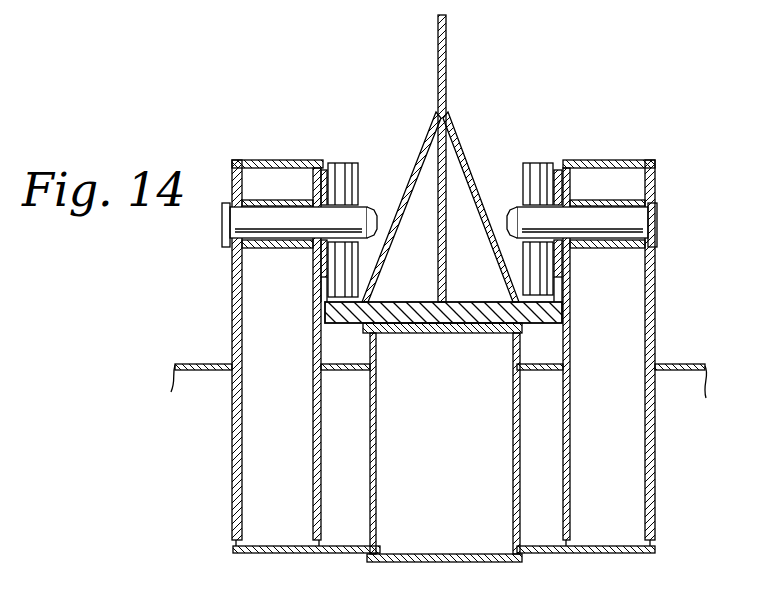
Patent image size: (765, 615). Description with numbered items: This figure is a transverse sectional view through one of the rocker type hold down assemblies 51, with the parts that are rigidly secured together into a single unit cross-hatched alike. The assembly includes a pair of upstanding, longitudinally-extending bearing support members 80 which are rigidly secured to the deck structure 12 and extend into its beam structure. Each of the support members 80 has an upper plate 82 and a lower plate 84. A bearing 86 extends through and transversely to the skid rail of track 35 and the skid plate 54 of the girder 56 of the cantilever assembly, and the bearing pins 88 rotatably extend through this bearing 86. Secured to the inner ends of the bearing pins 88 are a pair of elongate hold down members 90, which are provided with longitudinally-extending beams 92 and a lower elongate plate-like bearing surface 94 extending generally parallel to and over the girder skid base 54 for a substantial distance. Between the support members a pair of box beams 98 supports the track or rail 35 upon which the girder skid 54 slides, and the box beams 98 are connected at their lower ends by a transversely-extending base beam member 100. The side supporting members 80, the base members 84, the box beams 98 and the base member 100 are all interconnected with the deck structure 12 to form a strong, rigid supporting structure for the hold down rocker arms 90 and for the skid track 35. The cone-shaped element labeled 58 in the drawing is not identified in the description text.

The deck structure 12 is at (350, 372).
The skid rail of track 35 is at (460, 333).
The rocker type hold down assembly 51 is at (228, 273).
The skid plate 54 is at (460, 307).
The girder 56 is at (444, 58).
The cone 58 is at (423, 136).
The bearing support members 80 is at (562, 167).
The upper plate 82 is at (279, 158).
The lower plate 84 is at (278, 553).
The bearing 86 is at (282, 248).
The bearing pins 88 is at (658, 218).
The hold down members 90 is at (345, 163).
The longitudinally-extending beams 92 is at (360, 188).
The bearing surface 94 is at (322, 297).
The box beams 98 is at (377, 438).
The base beam member 100 is at (428, 562).